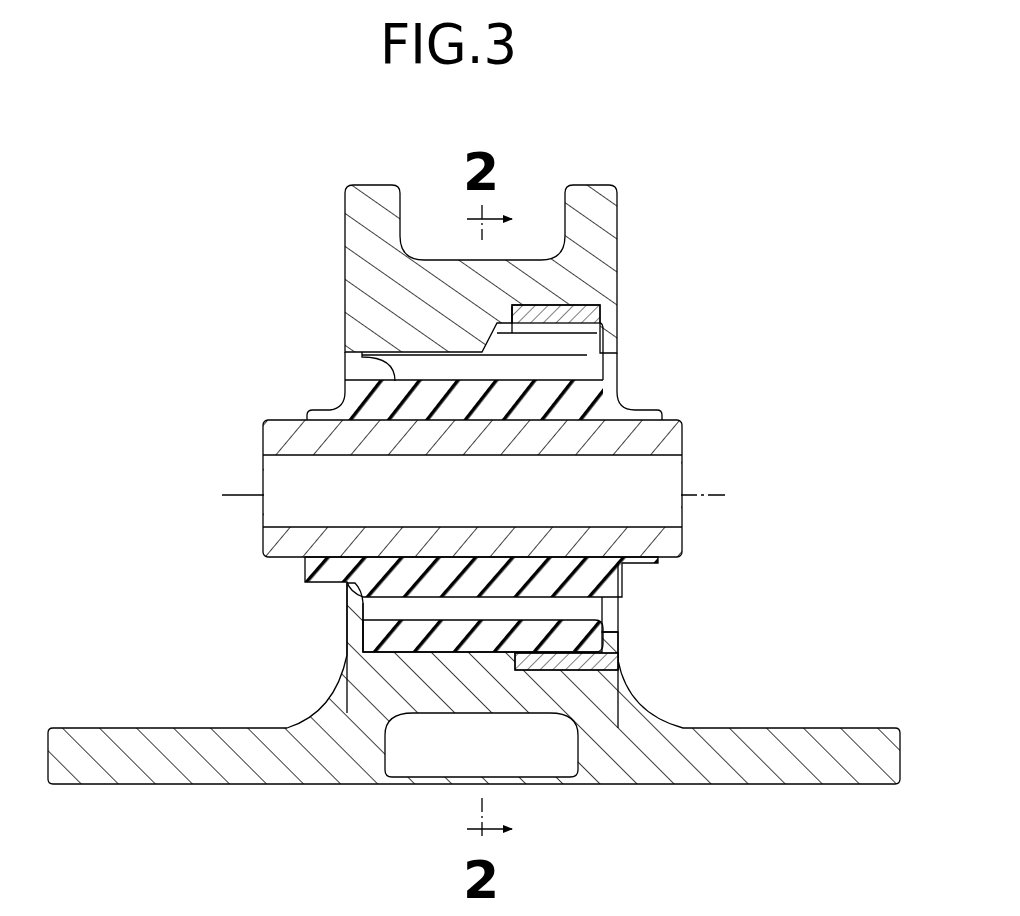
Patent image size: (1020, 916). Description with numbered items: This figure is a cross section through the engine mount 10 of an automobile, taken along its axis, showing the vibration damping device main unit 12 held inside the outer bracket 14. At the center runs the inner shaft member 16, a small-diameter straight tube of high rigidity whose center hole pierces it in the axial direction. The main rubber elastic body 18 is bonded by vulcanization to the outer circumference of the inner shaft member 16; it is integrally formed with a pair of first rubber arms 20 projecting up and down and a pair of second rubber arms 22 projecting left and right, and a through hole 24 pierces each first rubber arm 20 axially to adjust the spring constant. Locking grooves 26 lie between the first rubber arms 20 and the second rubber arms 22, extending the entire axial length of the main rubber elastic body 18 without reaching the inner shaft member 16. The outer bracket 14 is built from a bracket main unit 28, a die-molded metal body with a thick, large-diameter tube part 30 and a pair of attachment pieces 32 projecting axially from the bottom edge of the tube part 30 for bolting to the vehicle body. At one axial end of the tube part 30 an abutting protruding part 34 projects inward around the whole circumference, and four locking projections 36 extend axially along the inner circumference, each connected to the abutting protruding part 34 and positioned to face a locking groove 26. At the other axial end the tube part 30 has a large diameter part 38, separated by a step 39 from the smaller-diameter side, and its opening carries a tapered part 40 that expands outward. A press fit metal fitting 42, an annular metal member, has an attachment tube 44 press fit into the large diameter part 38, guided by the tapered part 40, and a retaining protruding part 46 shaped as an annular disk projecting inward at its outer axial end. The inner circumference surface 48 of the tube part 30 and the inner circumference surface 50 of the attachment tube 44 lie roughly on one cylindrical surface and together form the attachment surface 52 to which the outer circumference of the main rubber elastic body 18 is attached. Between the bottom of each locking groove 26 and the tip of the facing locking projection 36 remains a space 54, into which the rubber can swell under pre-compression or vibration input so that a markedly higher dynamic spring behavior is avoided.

The engine mount 10 is at (745, 322).
The vibration damping device main unit 12 is at (643, 393).
The outer bracket 14 is at (280, 797).
The inner shaft member 16 is at (290, 437).
The main rubber elastic body 18 is at (590, 570).
The first rubber arm 20 is at (348, 672).
The second rubber arm 22 is at (578, 367).
The through hole 24 is at (392, 620).
The locking groove 26 is at (367, 367).
The bracket main unit 28 is at (622, 230).
The tube part 30 is at (412, 287).
The attachment piece 32 is at (140, 747).
The abutting protruding part 34 is at (353, 638).
The locking projection 36 is at (380, 335).
The large diameter part 38 is at (560, 313).
The step 39 is at (550, 650).
The tapered part 40 is at (613, 305).
The press fit metal fitting 42 is at (625, 647).
The attachment tube 44 is at (578, 662).
The retaining protruding part 46 is at (610, 630).
The inner circumference surface of the tube part 48 is at (440, 657).
The inner circumference surface of the attachment tube 50 is at (550, 645).
The attachment surface 52 is at (498, 643).
The space 54 is at (450, 363).